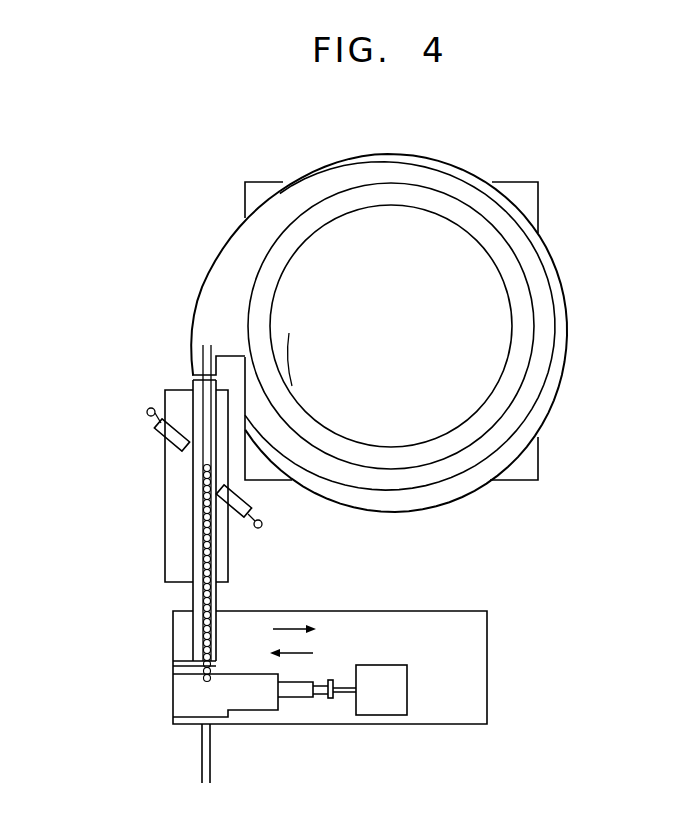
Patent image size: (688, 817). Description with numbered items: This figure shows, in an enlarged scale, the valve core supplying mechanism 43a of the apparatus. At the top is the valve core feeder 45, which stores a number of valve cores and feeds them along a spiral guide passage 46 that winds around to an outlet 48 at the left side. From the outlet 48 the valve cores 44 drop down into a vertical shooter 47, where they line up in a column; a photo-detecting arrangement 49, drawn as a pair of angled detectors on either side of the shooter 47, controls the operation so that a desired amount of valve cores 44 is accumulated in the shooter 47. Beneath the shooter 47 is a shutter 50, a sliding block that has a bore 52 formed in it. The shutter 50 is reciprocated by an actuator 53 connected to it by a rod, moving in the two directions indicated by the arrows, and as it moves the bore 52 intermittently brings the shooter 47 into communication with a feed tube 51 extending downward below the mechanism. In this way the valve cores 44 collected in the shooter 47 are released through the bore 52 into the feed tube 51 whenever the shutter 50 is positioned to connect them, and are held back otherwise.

The valve core supplying mechanism 43a is at (127, 398).
The valve cores 44 is at (211, 598).
The valve core feeder 45 is at (212, 266).
The guide passage 46 is at (516, 310).
The shooter 47 is at (193, 553).
The outlet 48 is at (192, 362).
The photo-detecting arrangement 49 is at (250, 503).
The shutter 50 is at (193, 690).
The feed tube 51 is at (210, 753).
The bore 52 is at (203, 678).
The actuator 53 is at (377, 716).